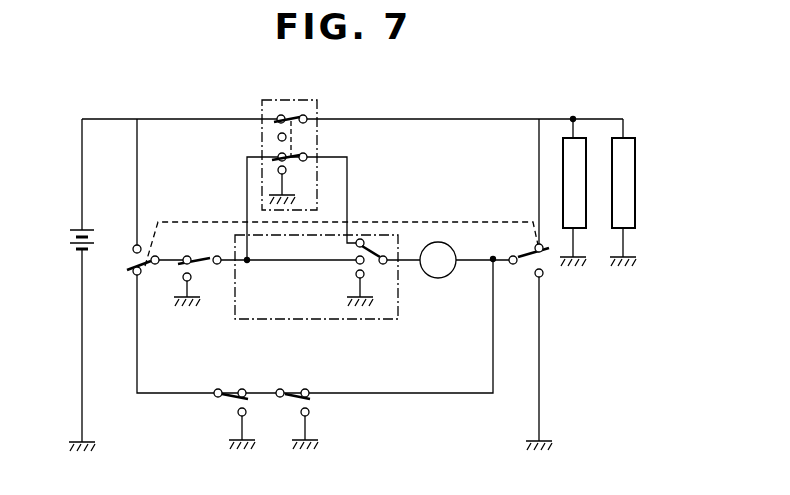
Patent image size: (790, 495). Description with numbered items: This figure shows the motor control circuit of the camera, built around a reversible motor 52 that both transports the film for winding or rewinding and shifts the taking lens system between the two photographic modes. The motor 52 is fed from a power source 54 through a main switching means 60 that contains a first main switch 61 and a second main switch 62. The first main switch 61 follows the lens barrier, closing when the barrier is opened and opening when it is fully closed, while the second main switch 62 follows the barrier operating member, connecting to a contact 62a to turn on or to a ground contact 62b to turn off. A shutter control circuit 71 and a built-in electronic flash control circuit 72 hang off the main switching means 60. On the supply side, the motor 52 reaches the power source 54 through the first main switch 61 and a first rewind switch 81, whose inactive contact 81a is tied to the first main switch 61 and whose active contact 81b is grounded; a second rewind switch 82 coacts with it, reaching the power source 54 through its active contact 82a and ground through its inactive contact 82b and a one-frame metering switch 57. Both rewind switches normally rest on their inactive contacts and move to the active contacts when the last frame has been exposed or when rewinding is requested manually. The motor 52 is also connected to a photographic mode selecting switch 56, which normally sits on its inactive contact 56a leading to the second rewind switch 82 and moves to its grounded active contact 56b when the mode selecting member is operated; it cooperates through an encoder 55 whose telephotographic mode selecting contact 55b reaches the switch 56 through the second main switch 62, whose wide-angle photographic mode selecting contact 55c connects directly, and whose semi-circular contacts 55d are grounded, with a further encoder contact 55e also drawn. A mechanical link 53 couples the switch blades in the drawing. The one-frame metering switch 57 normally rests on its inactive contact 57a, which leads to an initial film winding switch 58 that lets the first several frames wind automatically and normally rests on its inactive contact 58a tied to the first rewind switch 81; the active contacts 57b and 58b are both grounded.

The reversible motor 52 is at (443, 243).
The interlock link 53 is at (236, 222).
The power source 54 is at (80, 228).
The encoder 55 is at (398, 305).
The telephotographic mode selecting contact 55b is at (361, 239).
The wide-angle photographic mode selecting contact 55c is at (374, 252).
The outer semi-circular contacts 55d is at (356, 274).
The fixed contact 55e is at (386, 256).
The photographic mode selecting switch 56 is at (217, 256).
The inactive contact 56a is at (188, 256).
The active contact 56b is at (190, 281).
The one-frame metering switch 57 is at (230, 388).
The inactive contact 57a is at (244, 388).
The active contact 57b is at (238, 412).
The initial film winding switch 58 is at (293, 388).
The inactive contact 58a is at (308, 388).
The active contact 58b is at (310, 412).
The main switching means 60 is at (300, 115).
The first main switch 61 is at (319, 107).
The second main switch 62 is at (301, 155).
The contact 62a is at (280, 155).
The ground contact 62b is at (286, 170).
The shutter control circuit 71 is at (583, 230).
The built-in electronic flash control circuit 72 is at (632, 230).
The first rewind switch 81 is at (514, 265).
The inactive contact 81a is at (533, 243).
The active contact 81b is at (542, 275).
The second rewind switch 82 is at (155, 256).
The active contact 82a is at (134, 247).
The inactive contact 82b is at (138, 275).